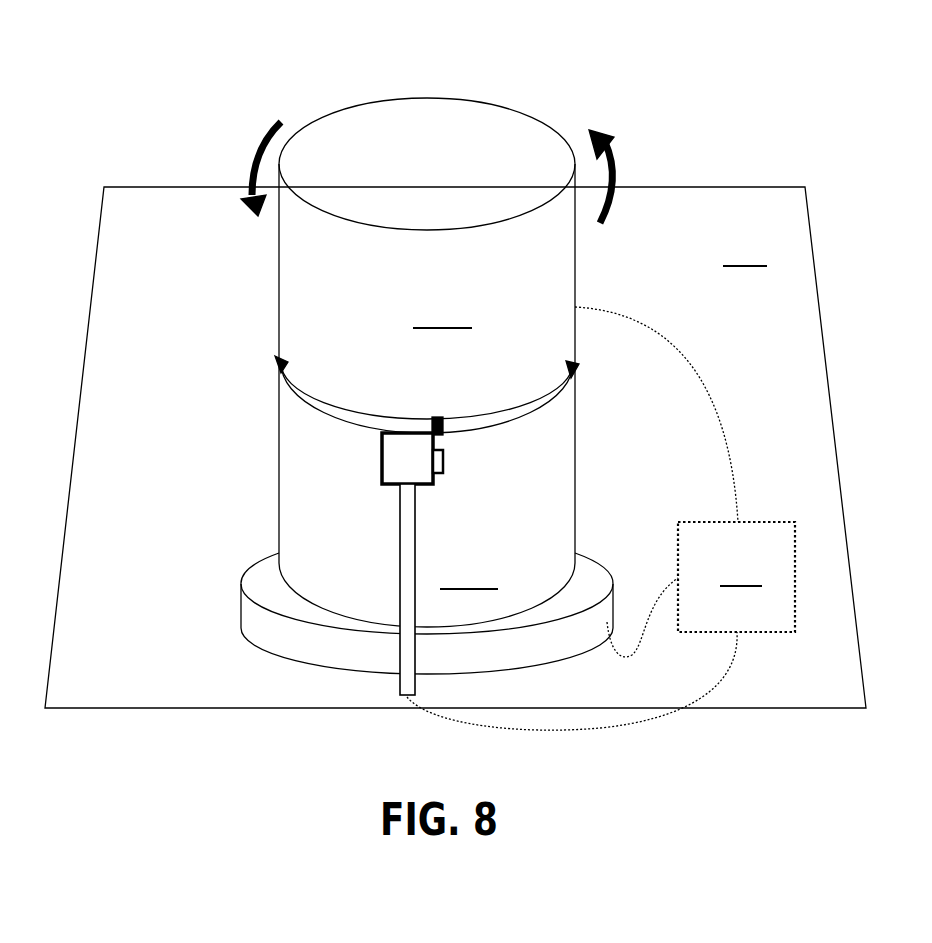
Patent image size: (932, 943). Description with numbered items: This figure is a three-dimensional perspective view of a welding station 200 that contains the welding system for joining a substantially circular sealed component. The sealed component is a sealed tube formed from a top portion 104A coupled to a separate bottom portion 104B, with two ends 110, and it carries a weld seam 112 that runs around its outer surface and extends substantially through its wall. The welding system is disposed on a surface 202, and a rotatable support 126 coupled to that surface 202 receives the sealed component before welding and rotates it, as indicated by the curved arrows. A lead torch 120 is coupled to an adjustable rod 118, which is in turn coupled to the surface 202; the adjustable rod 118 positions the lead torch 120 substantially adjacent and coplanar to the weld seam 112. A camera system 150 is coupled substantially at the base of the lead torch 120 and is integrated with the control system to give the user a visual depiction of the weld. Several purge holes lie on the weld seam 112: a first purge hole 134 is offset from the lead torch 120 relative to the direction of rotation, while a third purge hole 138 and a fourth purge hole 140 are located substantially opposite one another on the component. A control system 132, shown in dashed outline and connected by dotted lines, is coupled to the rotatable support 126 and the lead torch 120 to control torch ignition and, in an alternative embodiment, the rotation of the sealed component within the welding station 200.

The welding station 200 is at (473, 372).
The surface 202 is at (455, 447).
The end 110 is at (427, 143).
The top portion 104A is at (427, 258).
The bottom portion 104B is at (427, 489).
The weld seam 112 is at (292, 398).
The fourth purge hole 140 is at (280, 363).
The third purge hole 138 is at (577, 372).
The first purge hole 134 is at (446, 424).
The lead torch 120 is at (400, 456).
The camera system 150 is at (446, 460).
The adjustable rod 118 is at (400, 577).
The rotatable support 126 is at (268, 627).
The control system 132 is at (601, 518).